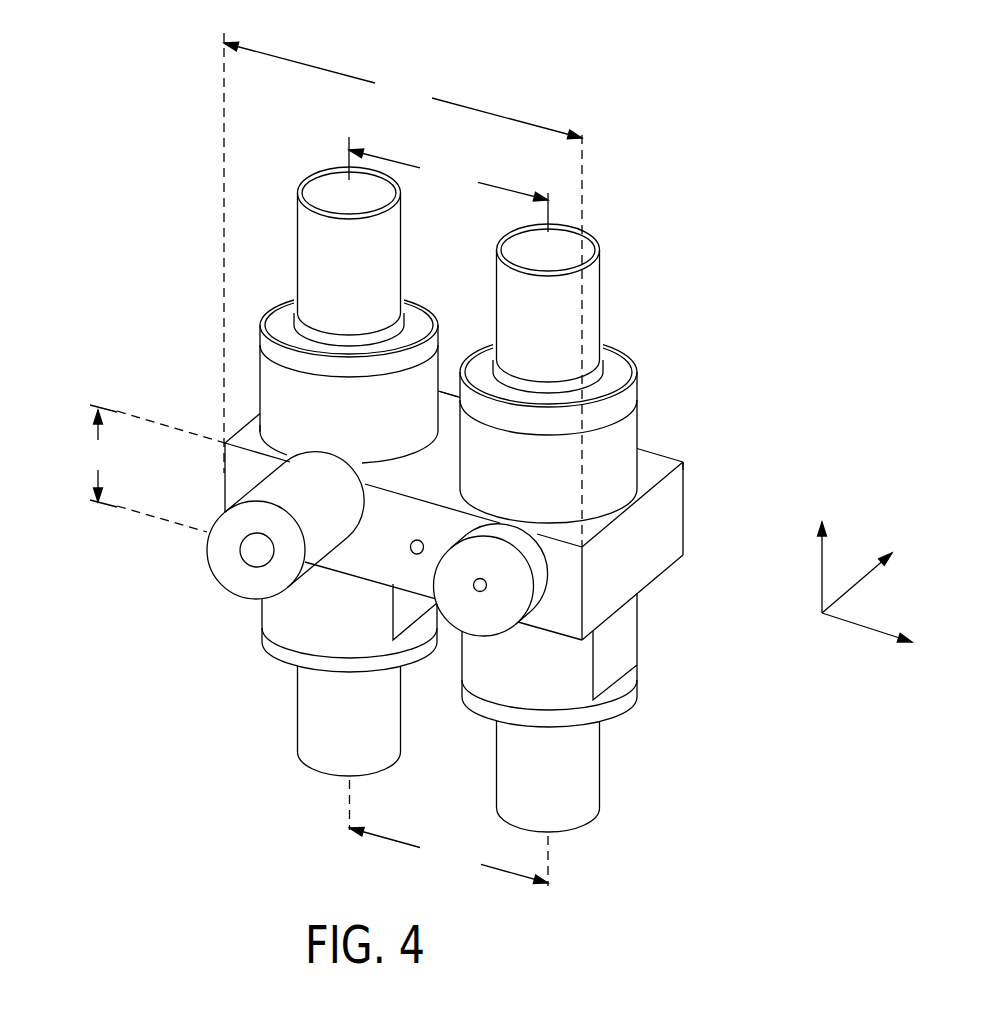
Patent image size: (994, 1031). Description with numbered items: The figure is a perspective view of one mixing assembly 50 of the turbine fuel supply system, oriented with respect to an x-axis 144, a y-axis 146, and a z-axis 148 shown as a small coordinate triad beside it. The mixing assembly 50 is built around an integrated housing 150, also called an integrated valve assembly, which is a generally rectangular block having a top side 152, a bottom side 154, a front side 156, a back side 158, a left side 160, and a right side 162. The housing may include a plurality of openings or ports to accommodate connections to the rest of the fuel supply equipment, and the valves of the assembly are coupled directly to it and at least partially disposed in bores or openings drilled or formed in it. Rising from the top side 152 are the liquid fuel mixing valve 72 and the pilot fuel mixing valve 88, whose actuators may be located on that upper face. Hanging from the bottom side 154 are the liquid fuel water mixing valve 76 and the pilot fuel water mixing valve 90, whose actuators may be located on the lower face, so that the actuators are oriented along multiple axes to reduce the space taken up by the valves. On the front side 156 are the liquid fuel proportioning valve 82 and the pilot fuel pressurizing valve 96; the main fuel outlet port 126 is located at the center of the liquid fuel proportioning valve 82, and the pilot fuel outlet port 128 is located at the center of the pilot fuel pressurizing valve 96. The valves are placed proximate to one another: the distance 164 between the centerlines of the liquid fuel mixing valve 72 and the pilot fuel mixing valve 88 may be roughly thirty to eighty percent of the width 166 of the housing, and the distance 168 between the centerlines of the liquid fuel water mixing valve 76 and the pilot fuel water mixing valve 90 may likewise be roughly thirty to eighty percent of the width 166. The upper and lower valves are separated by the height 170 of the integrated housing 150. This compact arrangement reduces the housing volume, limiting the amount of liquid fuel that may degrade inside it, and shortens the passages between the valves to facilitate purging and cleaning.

The mixing assembly 50 is at (155, 197).
The liquid fuel mixing valve 72 is at (268, 278).
The pilot fuel mixing valve 88 is at (628, 340).
The liquid fuel water mixing valve 76 is at (275, 673).
The pilot fuel water mixing valve 90 is at (622, 725).
The liquid fuel proportioning valve 82 is at (203, 577).
The pilot fuel pressurizing valve 96 is at (442, 648).
The main fuel outlet port 126 is at (243, 537).
The pilot fuel outlet port 128 is at (486, 588).
The integrated housing 150 is at (662, 452).
The top side 152 is at (653, 474).
The bottom side 154 is at (657, 577).
The front side 156 is at (240, 472).
The back side 158 is at (449, 385).
The left side 160 is at (257, 418).
The right side 162 is at (675, 518).
The distance 164 is at (448, 184).
The width 166 is at (403, 290).
The distance 168 is at (449, 833).
The height 170 is at (152, 468).
The x-axis 144 is at (860, 627).
The y-axis 146 is at (848, 583).
The z-axis 148 is at (822, 577).